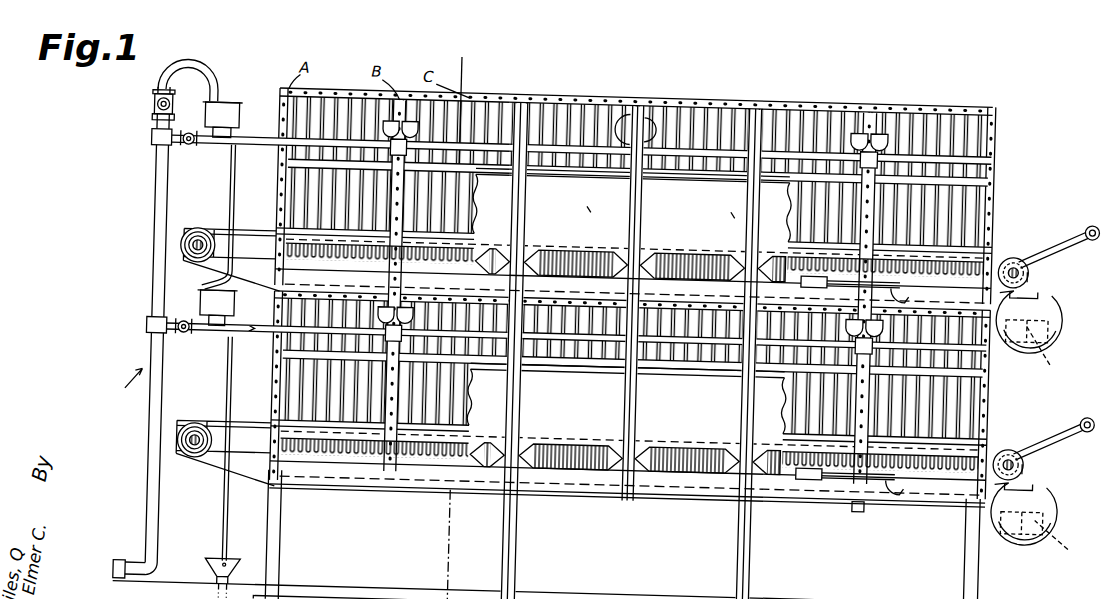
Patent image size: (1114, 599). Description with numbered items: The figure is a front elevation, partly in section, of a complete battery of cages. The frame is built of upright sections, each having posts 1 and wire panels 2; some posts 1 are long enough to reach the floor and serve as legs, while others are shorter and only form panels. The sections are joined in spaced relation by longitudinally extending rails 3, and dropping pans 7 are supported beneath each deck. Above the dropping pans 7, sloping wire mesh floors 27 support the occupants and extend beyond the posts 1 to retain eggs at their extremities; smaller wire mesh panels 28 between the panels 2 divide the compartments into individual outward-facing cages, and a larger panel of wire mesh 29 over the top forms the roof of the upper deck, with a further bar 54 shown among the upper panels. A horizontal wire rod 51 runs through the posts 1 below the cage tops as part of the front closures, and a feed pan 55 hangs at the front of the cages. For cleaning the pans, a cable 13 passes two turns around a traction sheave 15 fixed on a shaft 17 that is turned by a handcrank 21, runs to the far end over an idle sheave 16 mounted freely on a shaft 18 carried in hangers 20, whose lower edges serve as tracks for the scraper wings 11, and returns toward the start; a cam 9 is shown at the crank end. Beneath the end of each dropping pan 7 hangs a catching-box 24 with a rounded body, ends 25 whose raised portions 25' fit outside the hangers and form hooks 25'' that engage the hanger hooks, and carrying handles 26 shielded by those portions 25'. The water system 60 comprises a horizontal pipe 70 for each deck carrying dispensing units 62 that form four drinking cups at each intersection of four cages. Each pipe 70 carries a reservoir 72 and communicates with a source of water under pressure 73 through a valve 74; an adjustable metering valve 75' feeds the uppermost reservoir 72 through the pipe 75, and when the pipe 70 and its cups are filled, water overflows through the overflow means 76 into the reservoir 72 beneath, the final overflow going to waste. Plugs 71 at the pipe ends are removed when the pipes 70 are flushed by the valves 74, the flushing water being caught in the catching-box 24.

The posts 1 is at (292, 530).
The wire panels 2 is at (282, 192).
The rails 3 is at (627, 370).
The dropping pans 7 is at (276, 288).
The cam 9 is at (910, 284).
The wings 11 is at (826, 272).
The cable 13 is at (450, 266).
The traction sheave 15 is at (1034, 256).
The idle sheave 16 is at (205, 230).
The shaft 17 is at (1018, 238).
The shaft 18 is at (198, 247).
The hangers 20 is at (254, 250).
The handcrank 21 is at (1066, 223).
The catching-box 24 is at (1060, 283).
The ends 25 is at (1060, 432).
The portions 25' is at (1053, 428).
The hooks 25'' is at (1048, 387).
The carrying handles 26 is at (1052, 445).
The wire mesh floors 27 is at (342, 260).
The wire mesh panels 28 is at (290, 163).
The panel of wire mesh 29 is at (608, 108).
The horizontal wire rod 51 is at (678, 170).
The bar 54 is at (705, 110).
The feed pan 55 is at (649, 298).
The water system 60 is at (129, 388).
The body 62 is at (388, 118).
The horizontal pipes 70 is at (258, 137).
The plugs 71 is at (878, 150).
The reservoir 72 is at (226, 104).
The source of supply of water under pressure 73 is at (157, 266).
The valve 74 is at (186, 148).
The pipe 75 is at (195, 72).
The adjustable metering valve 75' is at (136, 104).
The overflow means 76 is at (233, 195).